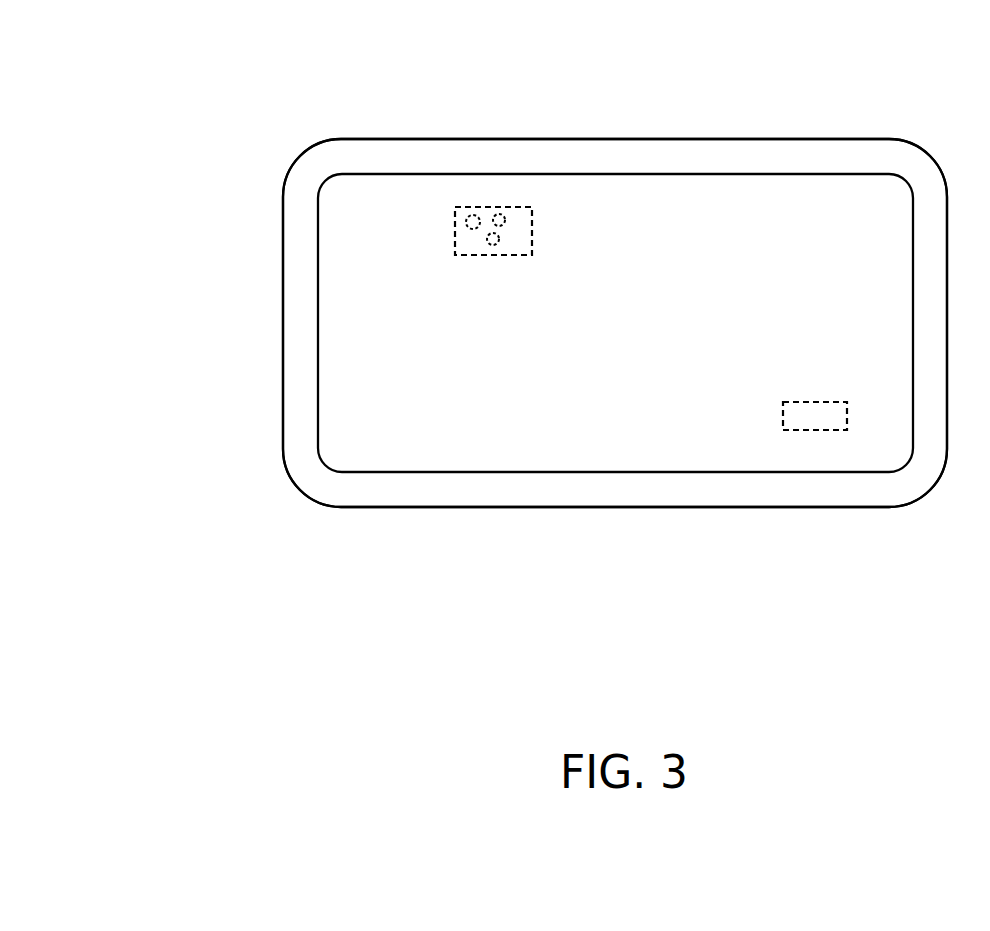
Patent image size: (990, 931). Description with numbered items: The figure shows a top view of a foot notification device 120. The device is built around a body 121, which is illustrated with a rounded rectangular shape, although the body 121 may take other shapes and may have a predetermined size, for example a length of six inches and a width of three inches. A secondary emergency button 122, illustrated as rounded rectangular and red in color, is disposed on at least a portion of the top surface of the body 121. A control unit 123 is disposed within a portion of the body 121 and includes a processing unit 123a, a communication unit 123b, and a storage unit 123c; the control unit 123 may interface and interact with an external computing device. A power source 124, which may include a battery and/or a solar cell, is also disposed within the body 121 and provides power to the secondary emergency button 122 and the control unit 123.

The foot notification device 120 is at (285, 105).
The body 121 is at (302, 490).
The secondary emergency button 122 is at (537, 433).
The control unit 123 is at (462, 208).
The processing unit 123a is at (466, 222).
The communication unit 123b is at (498, 213).
The storage unit 123c is at (500, 240).
The power source 124 is at (813, 430).